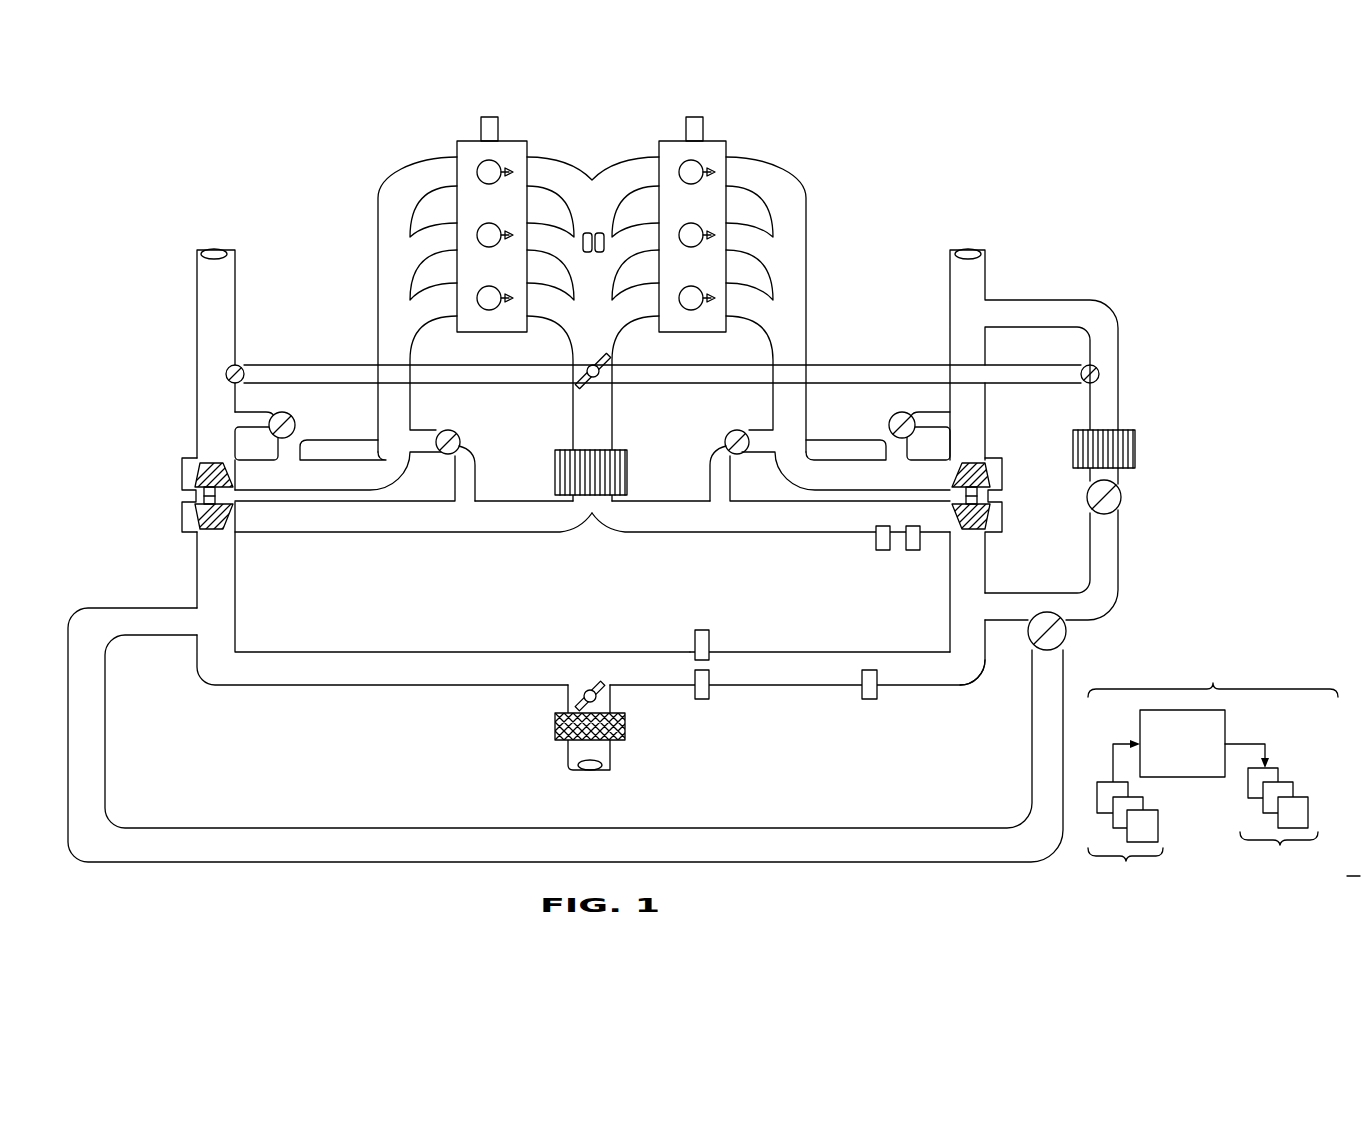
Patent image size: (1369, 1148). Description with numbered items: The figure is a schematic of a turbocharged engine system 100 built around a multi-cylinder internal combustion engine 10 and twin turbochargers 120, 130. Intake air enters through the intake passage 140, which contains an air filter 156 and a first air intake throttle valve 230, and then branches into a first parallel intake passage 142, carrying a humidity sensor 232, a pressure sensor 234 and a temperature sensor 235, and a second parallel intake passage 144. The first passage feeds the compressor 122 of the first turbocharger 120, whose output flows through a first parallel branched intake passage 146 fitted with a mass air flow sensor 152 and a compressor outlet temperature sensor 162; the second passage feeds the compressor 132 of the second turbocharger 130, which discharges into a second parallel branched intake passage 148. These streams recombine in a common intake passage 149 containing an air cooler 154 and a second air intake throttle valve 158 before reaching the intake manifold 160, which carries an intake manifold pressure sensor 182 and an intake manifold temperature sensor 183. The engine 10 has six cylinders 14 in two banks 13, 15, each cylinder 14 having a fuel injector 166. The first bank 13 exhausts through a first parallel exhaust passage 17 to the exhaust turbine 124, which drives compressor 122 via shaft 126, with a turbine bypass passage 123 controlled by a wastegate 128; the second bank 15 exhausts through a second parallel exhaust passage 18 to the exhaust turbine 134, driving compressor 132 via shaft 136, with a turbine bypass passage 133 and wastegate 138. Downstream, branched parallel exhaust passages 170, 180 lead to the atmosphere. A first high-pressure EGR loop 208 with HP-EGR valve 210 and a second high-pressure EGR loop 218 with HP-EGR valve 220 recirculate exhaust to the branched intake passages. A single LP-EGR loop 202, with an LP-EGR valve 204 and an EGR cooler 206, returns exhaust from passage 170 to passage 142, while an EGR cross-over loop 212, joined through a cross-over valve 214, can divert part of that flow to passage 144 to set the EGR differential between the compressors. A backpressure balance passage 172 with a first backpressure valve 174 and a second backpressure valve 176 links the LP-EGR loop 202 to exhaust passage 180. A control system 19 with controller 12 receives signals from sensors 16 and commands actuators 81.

The internal combustion engine 10 is at (956, 141).
The turbocharged engine system 100 is at (1238, 133).
The controller 12 is at (1191, 746).
The first bank of cylinders 13 is at (718, 141).
The cylinder 14 is at (694, 238).
The second bank of cylinders 15 is at (474, 141).
The sensors 16 is at (1125, 843).
The first parallel exhaust passage 17 is at (806, 418).
The second parallel exhaust passage 18 is at (378, 426).
The control system 19 is at (1213, 667).
The actuators 81 is at (1279, 828).
The first turbocharger 120 is at (964, 452).
The compressor 122 is at (951, 550).
The turbine bypass passage 123 is at (936, 412).
The exhaust turbine 124 is at (984, 472).
The shaft 126 is at (983, 500).
The wastegate 128 is at (895, 416).
The second turbocharger 130 is at (217, 447).
The compressor 132 is at (236, 532).
The turbine bypass passage 133 is at (252, 412).
The exhaust turbine 134 is at (195, 470).
The shaft 136 is at (183, 504).
The wastegate 138 is at (296, 416).
The intake passage 140 is at (569, 756).
The first parallel intake passage 142 is at (770, 652).
The second parallel intake passage 144 is at (358, 652).
The first parallel branched intake passage 146 is at (763, 533).
The second parallel branched intake passage 148 is at (334, 533).
The common intake passage 149 is at (614, 432).
The mass air flow sensor 152 is at (876, 548).
The air cooler 154 is at (628, 472).
The air filter 156 is at (627, 723).
The second air intake throttle valve 158 is at (591, 362).
The intake manifold 160 is at (594, 160).
The compressor outlet temperature sensor 162 is at (910, 551).
The fuel injector 166 is at (705, 237).
The branched parallel exhaust passage 170 is at (950, 297).
The backpressure balance passage 172 is at (866, 366).
The first backpressure valve 174 is at (1084, 368).
The second backpressure valve 176 is at (243, 368).
The branched parallel exhaust passage 180 is at (237, 297).
The intake manifold pressure sensor 182 is at (586, 254).
The intake manifold temperature sensor 183 is at (598, 254).
The LP-EGR loop 202 is at (1120, 380).
The LP-EGR valve 204 is at (1121, 496).
The EGR cooler 206 is at (1136, 443).
The first high-pressure EGR loop 208 is at (714, 445).
The HP-EGR valve 210 is at (734, 430).
The EGR cross-over loop 212 is at (786, 828).
The cross-over valve 214 is at (1067, 636).
The second high-pressure EGR loop 218 is at (477, 462).
The HP-EGR valve 220 is at (451, 430).
The first air intake throttle valve 230 is at (596, 688).
The humidity sensor 232 is at (709, 632).
The pressure sensor 234 is at (708, 698).
The temperature sensor 235 is at (875, 698).